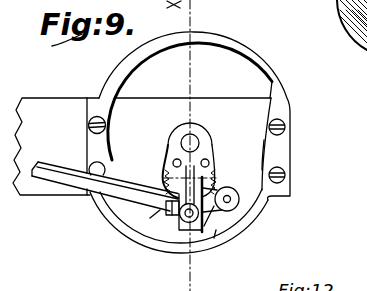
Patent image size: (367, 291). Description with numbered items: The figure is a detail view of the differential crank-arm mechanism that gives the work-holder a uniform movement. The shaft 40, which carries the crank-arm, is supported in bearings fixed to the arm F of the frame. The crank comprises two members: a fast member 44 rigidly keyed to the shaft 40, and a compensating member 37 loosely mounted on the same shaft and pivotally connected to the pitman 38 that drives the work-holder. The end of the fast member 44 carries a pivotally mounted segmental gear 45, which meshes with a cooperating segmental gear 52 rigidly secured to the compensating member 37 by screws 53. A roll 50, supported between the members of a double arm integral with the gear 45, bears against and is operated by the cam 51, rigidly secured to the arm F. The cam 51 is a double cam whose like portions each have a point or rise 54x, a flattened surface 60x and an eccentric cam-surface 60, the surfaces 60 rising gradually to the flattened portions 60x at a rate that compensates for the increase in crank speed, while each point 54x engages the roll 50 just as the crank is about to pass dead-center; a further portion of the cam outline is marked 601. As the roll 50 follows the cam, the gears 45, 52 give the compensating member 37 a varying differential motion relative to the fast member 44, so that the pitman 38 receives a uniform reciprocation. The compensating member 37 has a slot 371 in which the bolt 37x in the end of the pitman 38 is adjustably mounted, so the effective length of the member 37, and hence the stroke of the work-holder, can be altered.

The arm of the frame F is at (36, 100).
The eccentric cam-surface 60 is at (207, 44).
The flattened surface 60x is at (270, 146).
The housing lower flange 601 is at (170, 186).
The cam 51 is at (181, 44).
The point or rise 54x is at (266, 113).
The pitman 38 is at (50, 164).
The screws 53 is at (176, 160).
The shaft 40 is at (190, 142).
The cooperating segmental gear 52 is at (208, 163).
The fast member of the differential crank-arm 44 is at (163, 171).
The roll 50 is at (233, 188).
The segmental gear 45 is at (214, 206).
The compensating member of the differential crank 37 is at (165, 233).
The slot 371 is at (183, 190).
The bolt 37x is at (216, 230).